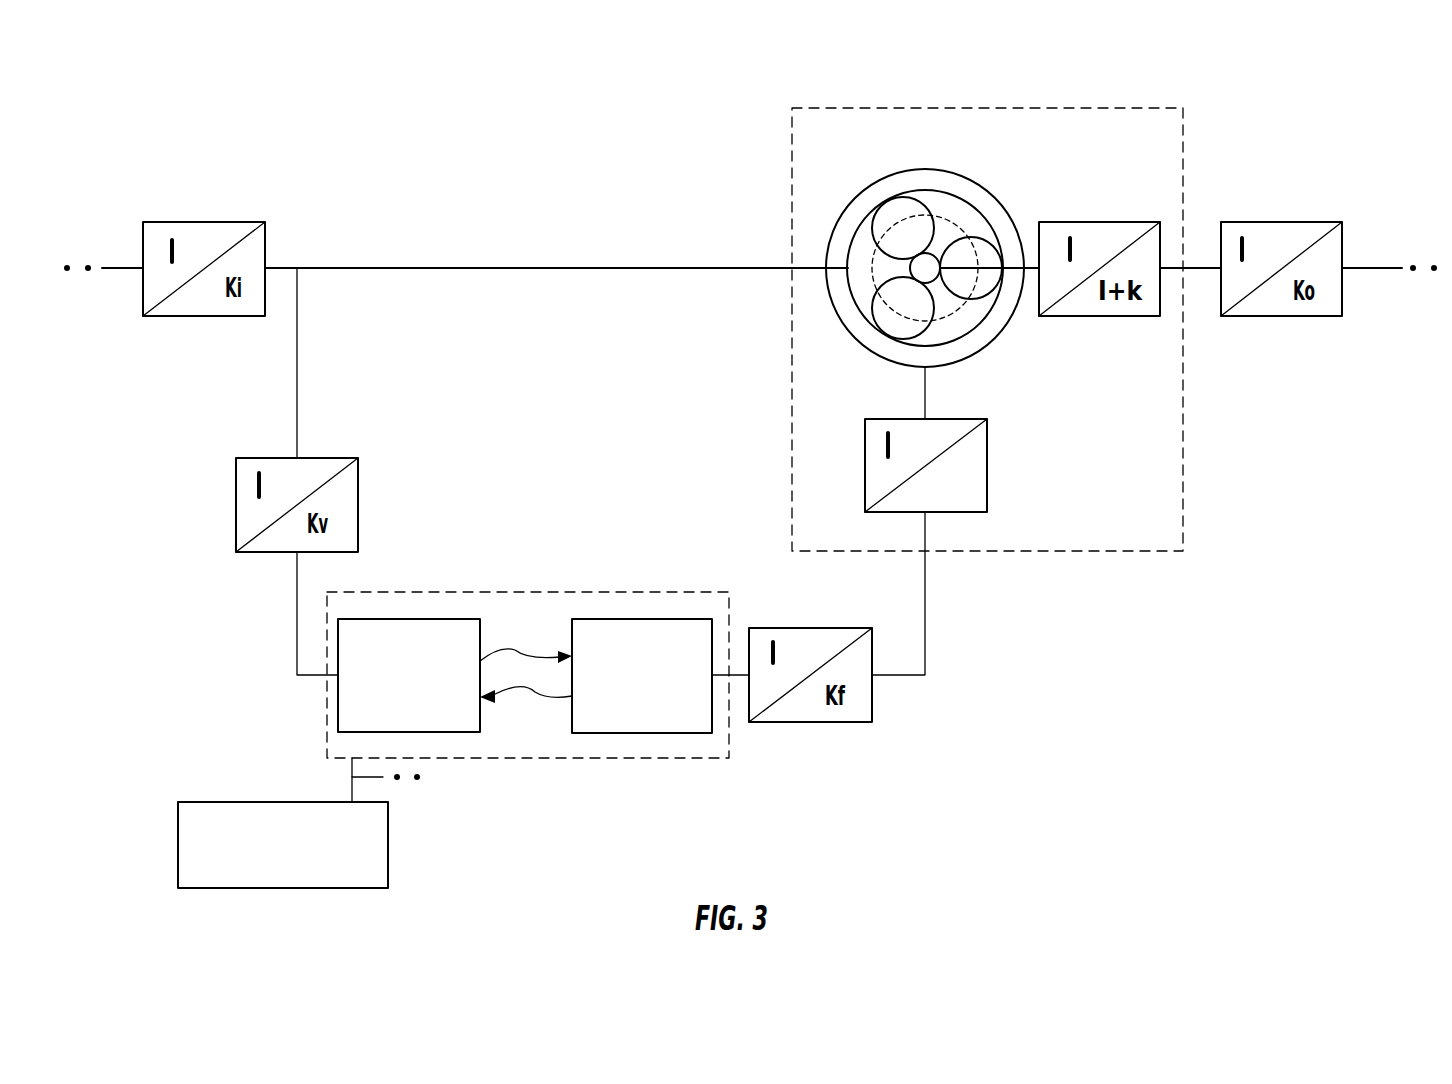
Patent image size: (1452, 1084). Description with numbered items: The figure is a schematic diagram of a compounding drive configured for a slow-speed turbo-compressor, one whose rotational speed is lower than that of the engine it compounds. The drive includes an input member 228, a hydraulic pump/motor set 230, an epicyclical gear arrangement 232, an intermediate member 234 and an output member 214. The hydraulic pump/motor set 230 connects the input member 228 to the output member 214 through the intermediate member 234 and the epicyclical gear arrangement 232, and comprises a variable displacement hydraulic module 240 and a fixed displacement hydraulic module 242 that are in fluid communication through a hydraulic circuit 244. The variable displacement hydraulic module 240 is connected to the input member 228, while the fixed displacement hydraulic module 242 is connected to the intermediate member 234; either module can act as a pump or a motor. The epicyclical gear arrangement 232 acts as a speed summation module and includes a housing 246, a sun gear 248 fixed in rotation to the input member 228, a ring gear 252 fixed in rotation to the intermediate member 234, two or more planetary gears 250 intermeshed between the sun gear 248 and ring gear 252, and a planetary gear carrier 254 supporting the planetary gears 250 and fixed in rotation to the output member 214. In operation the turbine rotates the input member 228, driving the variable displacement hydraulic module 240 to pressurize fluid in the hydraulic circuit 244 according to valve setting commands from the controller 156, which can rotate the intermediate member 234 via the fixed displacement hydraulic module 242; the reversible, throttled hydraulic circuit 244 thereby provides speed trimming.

The controller 156 is at (388, 828).
The output member 214 is at (1202, 268).
The input member 228 is at (336, 268).
The hydraulic pump/motor set 230 is at (510, 592).
The epicyclical gear arrangement 232 is at (848, 533).
The intermediate member 234 is at (905, 677).
The variable displacement hydraulic module 240 is at (404, 619).
The fixed displacement hydraulic module 242 is at (607, 619).
The hydraulic circuit 244 is at (508, 683).
The housing 246 is at (896, 108).
The sun gear 248 is at (935, 256).
The planetary gears 250 is at (870, 232).
The ring gear 252 is at (827, 300).
The planetary gear carrier 254 is at (950, 317).